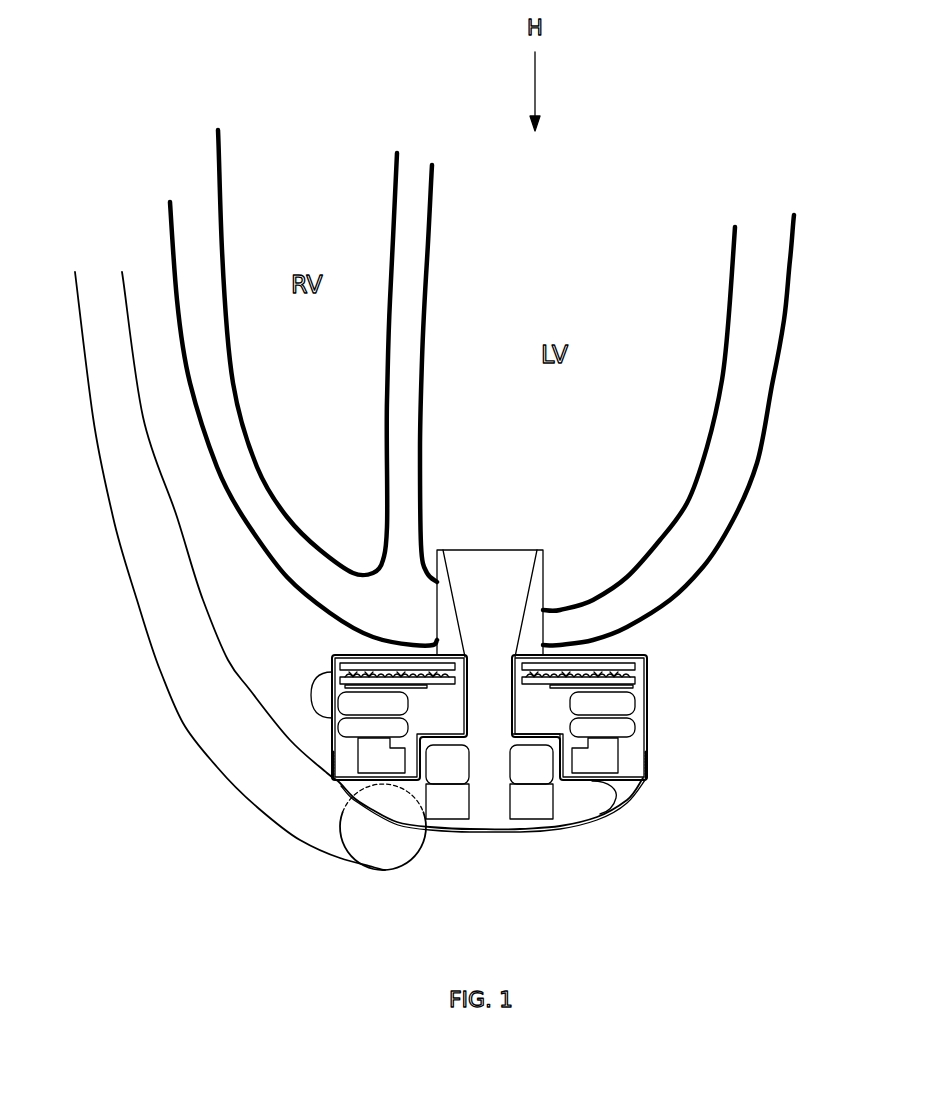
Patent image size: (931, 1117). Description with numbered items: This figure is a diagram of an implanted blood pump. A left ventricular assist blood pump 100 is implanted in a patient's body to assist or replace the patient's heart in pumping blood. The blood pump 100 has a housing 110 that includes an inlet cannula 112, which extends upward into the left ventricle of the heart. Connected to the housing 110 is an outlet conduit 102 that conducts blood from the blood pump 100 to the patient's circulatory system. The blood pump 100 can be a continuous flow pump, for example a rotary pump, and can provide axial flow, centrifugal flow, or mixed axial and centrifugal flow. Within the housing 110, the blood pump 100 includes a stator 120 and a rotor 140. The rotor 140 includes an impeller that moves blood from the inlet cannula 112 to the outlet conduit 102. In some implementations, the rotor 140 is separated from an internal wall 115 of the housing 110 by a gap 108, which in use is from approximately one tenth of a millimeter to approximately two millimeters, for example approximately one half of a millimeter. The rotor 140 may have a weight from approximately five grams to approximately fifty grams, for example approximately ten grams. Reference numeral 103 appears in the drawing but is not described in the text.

The left ventricular assist blood pump 100 is at (686, 801).
The outlet conduit 102 is at (183, 725).
The central channel of stem 103 is at (510, 653).
The gap 108 is at (463, 745).
The housing 110 is at (335, 725).
The inlet cannula 112 is at (545, 584).
The internal wall 115 is at (516, 728).
The stator 120 is at (602, 707).
The rotor 140 is at (530, 806).